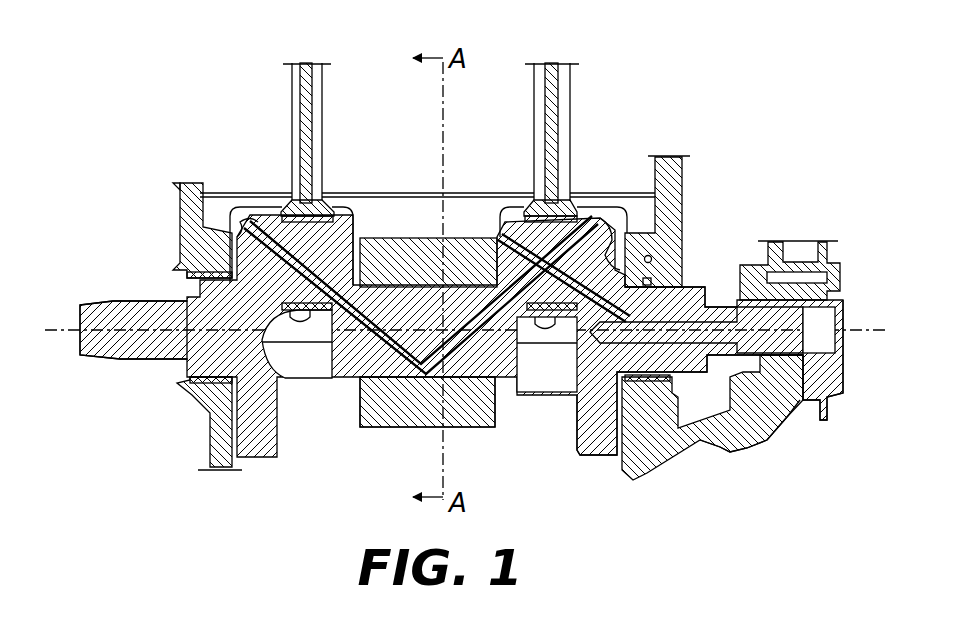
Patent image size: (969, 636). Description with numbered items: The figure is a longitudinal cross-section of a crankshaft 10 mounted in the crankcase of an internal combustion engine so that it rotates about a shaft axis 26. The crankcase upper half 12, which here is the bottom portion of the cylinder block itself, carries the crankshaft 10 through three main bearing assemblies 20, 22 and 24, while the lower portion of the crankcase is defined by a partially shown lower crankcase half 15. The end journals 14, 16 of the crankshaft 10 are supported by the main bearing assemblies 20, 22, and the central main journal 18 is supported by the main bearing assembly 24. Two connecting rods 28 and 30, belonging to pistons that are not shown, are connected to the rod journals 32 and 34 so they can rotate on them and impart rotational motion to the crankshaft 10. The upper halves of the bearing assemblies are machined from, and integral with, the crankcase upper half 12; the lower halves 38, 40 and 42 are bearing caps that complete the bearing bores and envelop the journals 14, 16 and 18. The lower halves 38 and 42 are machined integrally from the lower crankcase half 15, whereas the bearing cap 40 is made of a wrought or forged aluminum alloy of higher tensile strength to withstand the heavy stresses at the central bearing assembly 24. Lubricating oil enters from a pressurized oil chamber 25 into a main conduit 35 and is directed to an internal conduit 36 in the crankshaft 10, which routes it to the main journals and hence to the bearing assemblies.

The crankshaft 10 is at (350, 378).
The crankcase upper half 12 is at (467, 233).
The end journal 14 is at (144, 310).
The lower crankcase half 15 is at (220, 466).
The end journal 16 is at (688, 300).
The central main journal 18 is at (363, 362).
The main bearing assembly 20 is at (205, 247).
The main bearing assembly 22 is at (651, 256).
The main bearing assembly 24 is at (389, 222).
The pressurized oil chamber 25 is at (826, 318).
The shaft axis 26 is at (53, 332).
The connecting rod 28 is at (533, 128).
The connecting rod 30 is at (290, 120).
The rod journal 32 is at (571, 229).
The rod journal 34 is at (281, 220).
The main conduit 35 is at (720, 320).
The internal conduit 36 is at (352, 270).
The lower half 38 is at (203, 405).
The bearing cap 40 is at (482, 424).
The lower half 42 is at (645, 462).